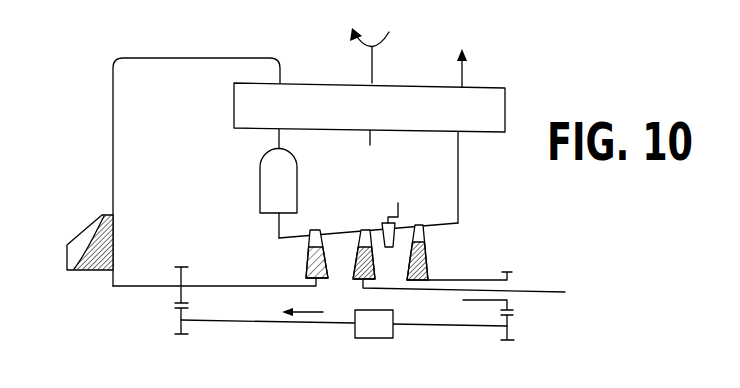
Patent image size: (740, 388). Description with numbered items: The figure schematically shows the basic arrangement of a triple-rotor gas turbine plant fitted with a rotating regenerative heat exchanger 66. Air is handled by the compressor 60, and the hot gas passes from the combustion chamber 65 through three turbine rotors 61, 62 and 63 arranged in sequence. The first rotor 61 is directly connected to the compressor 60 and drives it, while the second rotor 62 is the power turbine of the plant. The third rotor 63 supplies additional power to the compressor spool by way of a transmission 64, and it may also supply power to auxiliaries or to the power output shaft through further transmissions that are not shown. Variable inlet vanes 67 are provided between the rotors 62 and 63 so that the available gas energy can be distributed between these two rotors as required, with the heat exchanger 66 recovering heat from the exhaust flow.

The compressor 60 is at (90, 246).
The turbine rotor 61 is at (312, 250).
The power turbine rotor 62 is at (362, 247).
The turbine rotor 63 is at (423, 257).
The transmission 64 is at (373, 335).
The combustion chamber 65 is at (263, 172).
The heat exchanger 66 is at (410, 102).
The variable inlet vanes 67 is at (390, 230).